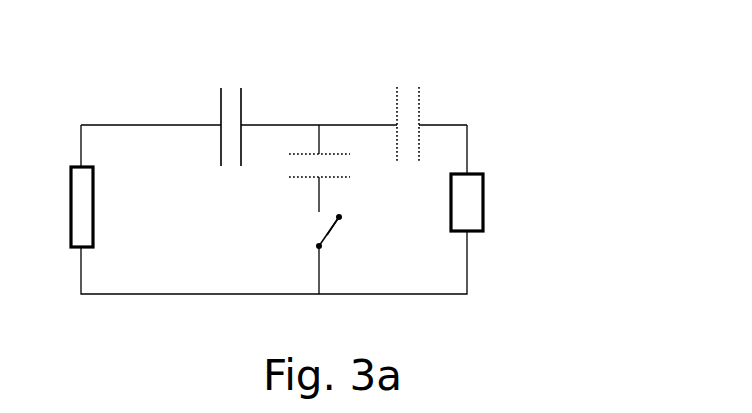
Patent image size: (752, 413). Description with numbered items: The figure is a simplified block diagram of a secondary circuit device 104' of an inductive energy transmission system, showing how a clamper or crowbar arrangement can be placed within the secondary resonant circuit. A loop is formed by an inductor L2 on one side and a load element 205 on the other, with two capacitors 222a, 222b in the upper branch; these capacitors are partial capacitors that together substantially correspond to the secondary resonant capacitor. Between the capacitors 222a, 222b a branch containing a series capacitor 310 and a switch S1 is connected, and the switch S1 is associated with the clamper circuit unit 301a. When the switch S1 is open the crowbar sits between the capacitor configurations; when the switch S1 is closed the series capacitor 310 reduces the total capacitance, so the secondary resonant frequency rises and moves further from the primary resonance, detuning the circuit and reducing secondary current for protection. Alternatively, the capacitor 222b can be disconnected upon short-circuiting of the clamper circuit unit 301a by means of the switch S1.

The secondary circuit device 104' is at (384, 161).
The capacitor 222a is at (243, 98).
The capacitor 222b is at (419, 102).
The series capacitor 310 is at (295, 177).
The clamper circuit unit 301a is at (327, 235).
The resistor / load 205 is at (483, 220).
The inductor L2 is at (62, 207).
The switch S1 is at (349, 221).